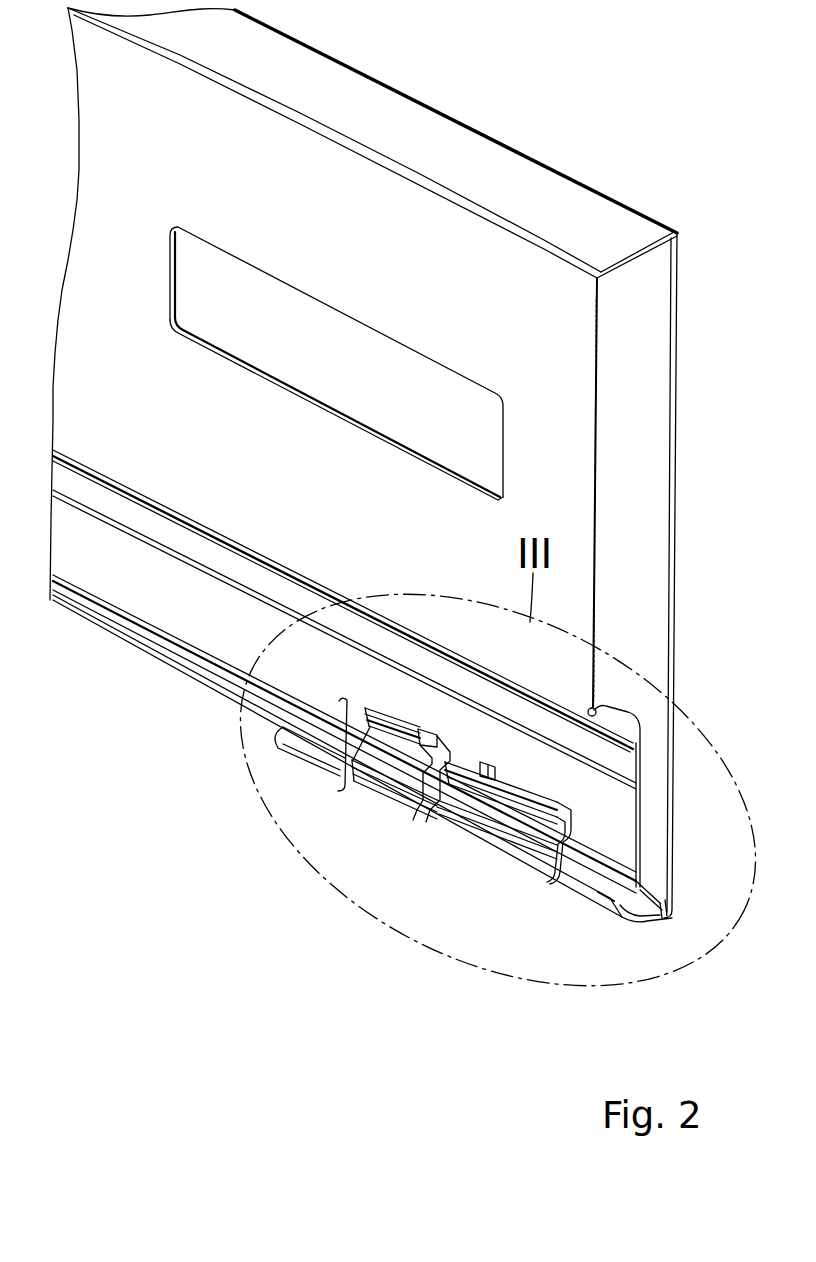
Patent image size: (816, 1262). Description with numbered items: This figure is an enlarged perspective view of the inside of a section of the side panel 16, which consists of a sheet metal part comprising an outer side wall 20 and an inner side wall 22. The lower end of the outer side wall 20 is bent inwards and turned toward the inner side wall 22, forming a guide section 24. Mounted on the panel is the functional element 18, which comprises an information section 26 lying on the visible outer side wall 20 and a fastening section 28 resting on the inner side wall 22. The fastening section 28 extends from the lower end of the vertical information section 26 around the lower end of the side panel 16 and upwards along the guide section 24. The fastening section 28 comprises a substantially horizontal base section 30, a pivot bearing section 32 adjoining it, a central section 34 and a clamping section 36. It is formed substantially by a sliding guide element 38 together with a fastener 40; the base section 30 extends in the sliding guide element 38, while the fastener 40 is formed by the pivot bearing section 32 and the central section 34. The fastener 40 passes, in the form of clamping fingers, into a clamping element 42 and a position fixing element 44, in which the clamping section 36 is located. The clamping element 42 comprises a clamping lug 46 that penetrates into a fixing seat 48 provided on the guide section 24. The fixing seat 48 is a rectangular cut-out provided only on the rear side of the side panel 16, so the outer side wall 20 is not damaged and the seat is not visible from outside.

The side panel 16 is at (440, 142).
The functional element 18 is at (678, 810).
The outer side wall 20 is at (677, 331).
The inner side wall 22 is at (599, 367).
The guide section 24 is at (643, 882).
The information section 26 is at (670, 876).
The fastening section 28 is at (560, 896).
The base section 30 is at (645, 913).
The pivot bearing section 32 is at (553, 882).
The central section 34 is at (510, 820).
The clamping section 36 is at (560, 822).
The sliding guide element 38 is at (655, 918).
The fastener 40 is at (340, 753).
The clamping element 42 is at (370, 730).
The position fixing element 44 is at (392, 735).
The clamping lug 46 is at (450, 757).
The fixing seat 48 is at (480, 770).